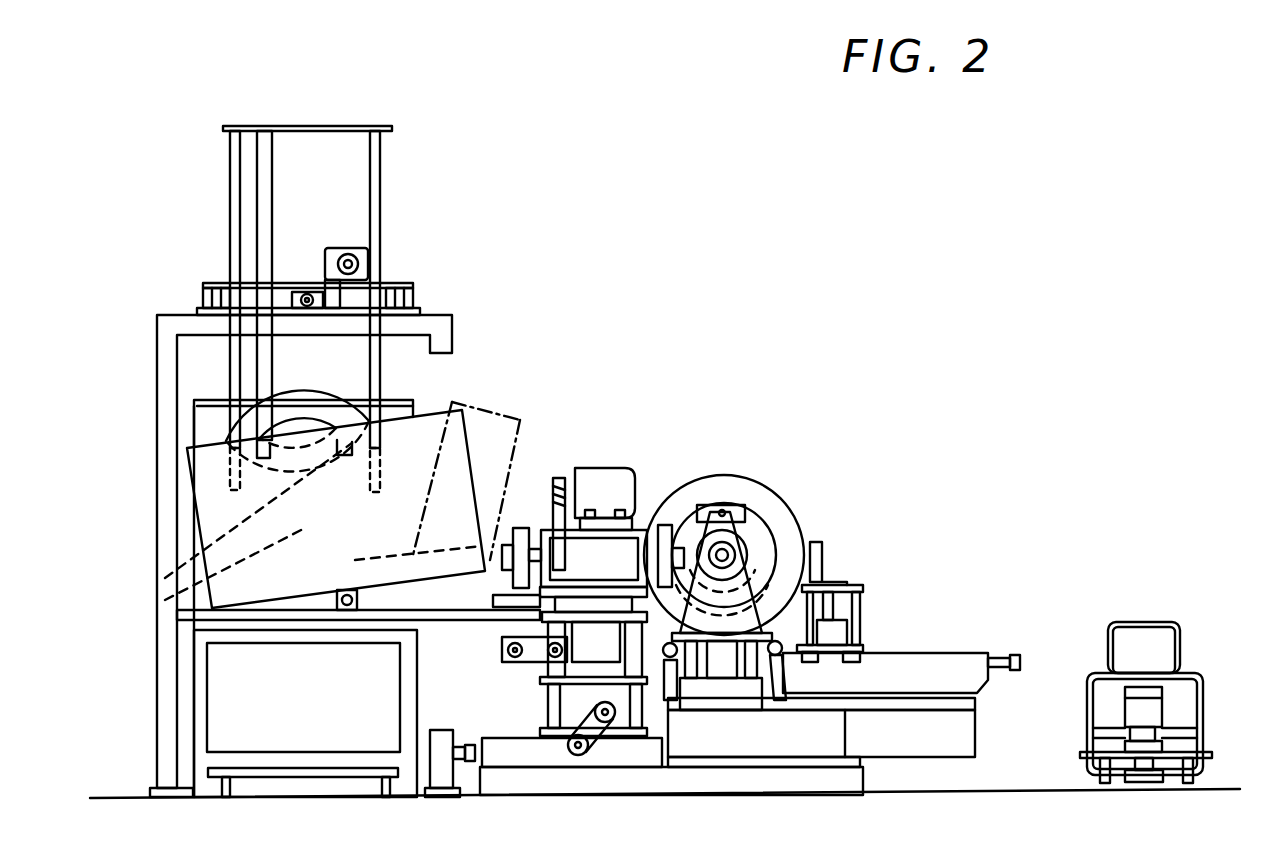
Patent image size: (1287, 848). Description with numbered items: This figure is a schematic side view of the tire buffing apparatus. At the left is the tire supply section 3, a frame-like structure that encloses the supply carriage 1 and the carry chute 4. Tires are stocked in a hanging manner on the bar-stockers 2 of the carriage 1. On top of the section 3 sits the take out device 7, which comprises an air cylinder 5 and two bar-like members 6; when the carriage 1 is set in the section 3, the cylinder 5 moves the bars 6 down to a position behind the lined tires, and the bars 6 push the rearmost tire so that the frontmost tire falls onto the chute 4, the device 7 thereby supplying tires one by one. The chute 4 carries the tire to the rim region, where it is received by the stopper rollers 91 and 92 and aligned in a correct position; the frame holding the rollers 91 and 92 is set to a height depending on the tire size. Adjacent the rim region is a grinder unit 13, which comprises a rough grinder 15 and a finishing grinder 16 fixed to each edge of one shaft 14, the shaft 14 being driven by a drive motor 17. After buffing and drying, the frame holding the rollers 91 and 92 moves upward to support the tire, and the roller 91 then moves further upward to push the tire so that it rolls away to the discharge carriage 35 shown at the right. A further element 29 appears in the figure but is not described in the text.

The supply carriage 1 is at (413, 400).
The bar-stocker 2 is at (165, 578).
The tire supply section 3 is at (128, 357).
The carry chute 4 is at (467, 427).
The air cylinder 5 is at (260, 184).
The bar-like members 6 is at (230, 225).
The take out device 7 is at (410, 150).
The grinder unit 13 is at (645, 433).
The shaft 14 is at (620, 553).
The rough grinder 15 is at (664, 526).
The finishing grinder 16 is at (522, 526).
The drive motor 17 is at (608, 474).
The support bracket 29 is at (845, 562).
The discharge carriage 35 is at (1178, 607).
The stopper roller 91 is at (668, 660).
The stopper roller 92 is at (776, 656).